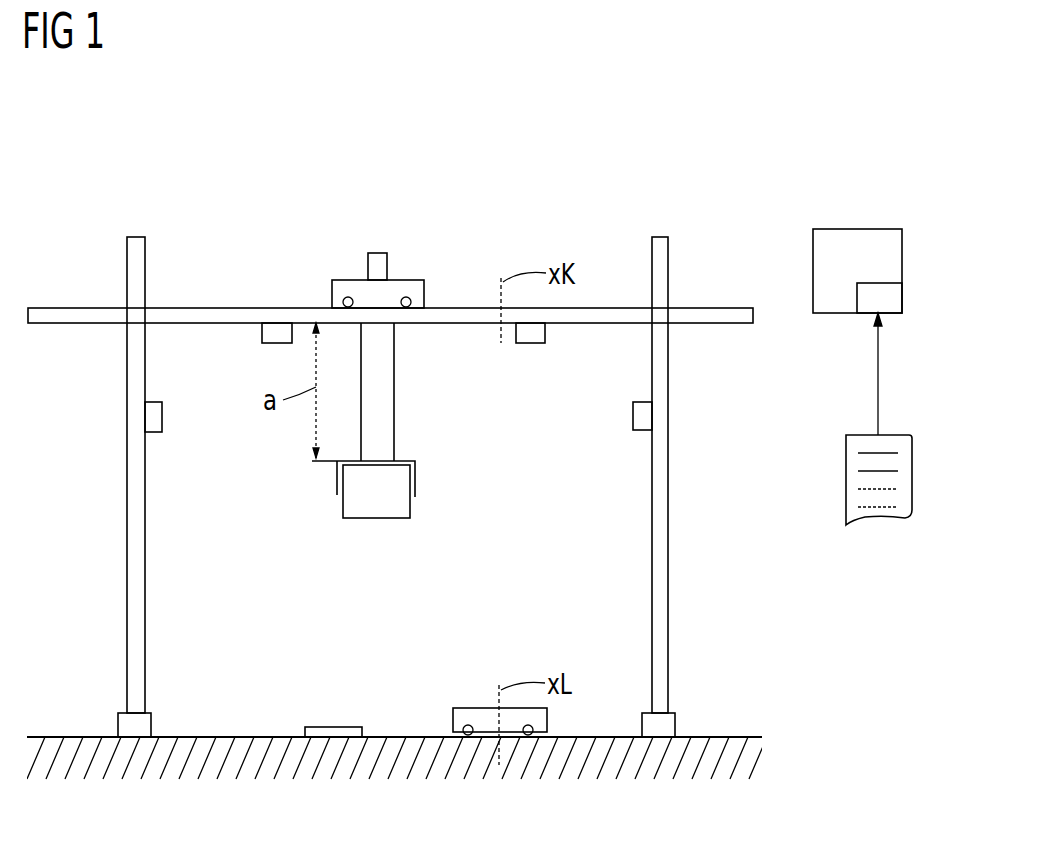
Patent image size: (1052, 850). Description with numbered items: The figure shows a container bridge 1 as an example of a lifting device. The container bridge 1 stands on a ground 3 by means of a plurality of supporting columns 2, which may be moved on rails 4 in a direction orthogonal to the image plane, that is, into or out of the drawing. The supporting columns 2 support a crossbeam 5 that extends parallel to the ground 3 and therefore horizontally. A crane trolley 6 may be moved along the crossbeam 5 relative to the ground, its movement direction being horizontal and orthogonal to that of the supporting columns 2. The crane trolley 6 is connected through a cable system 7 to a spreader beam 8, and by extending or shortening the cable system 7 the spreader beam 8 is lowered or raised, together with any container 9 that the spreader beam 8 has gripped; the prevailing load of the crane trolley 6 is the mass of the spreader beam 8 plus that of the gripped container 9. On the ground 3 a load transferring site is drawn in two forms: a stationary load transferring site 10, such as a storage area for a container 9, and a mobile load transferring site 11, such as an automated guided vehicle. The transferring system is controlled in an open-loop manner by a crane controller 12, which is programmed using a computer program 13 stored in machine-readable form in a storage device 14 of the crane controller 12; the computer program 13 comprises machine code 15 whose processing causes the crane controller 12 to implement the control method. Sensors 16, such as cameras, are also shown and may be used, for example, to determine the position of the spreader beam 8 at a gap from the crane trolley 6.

The container bridge 1 is at (570, 170).
The supporting columns 2 is at (137, 236).
The ground 3 is at (45, 735).
The rails 4 is at (118, 728).
The crossbeam 5 is at (58, 307).
The crane trolley 6 is at (345, 280).
The cable system 7 is at (361, 350).
The spreader beam 8 is at (415, 482).
The container 9 is at (372, 520).
The stationary load transferring site 10 is at (333, 725).
The mobile load transferring site 11 is at (470, 707).
The crane controller 12 is at (856, 228).
The computer program 13 is at (887, 520).
The storage device 14 is at (892, 305).
The machine code 15 is at (858, 487).
The sensors 16 is at (378, 252).